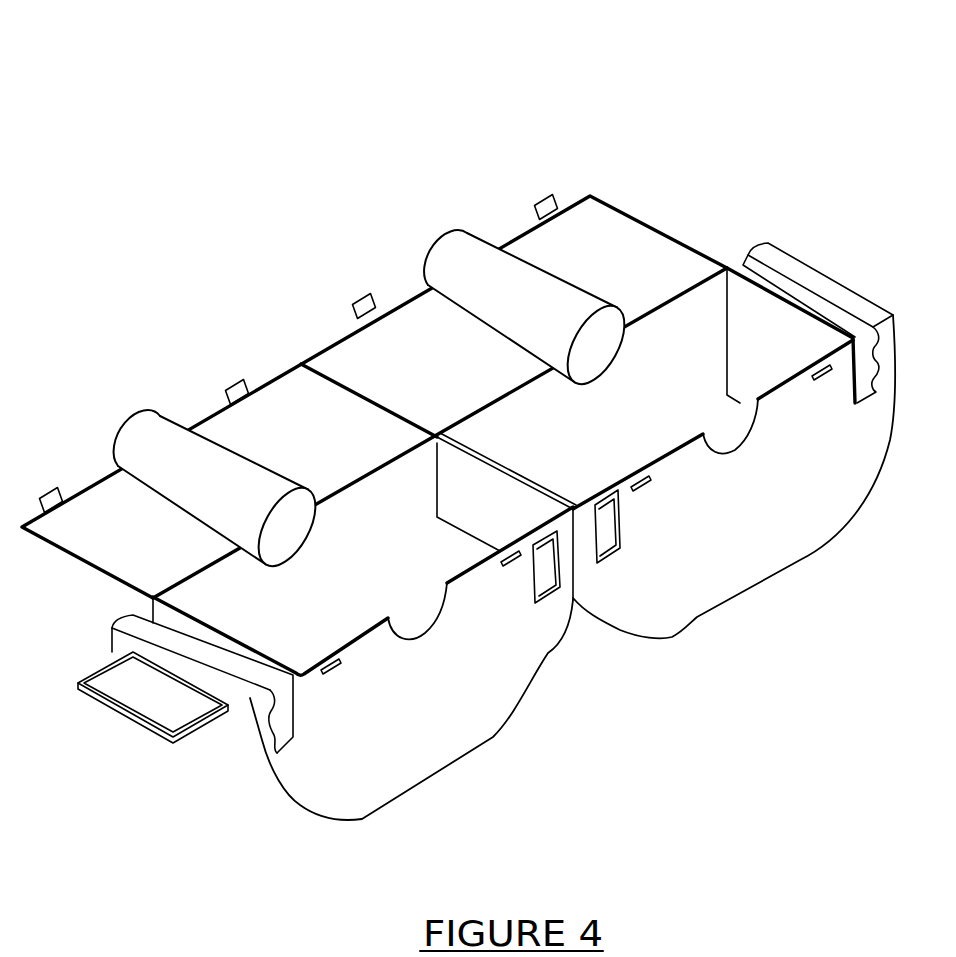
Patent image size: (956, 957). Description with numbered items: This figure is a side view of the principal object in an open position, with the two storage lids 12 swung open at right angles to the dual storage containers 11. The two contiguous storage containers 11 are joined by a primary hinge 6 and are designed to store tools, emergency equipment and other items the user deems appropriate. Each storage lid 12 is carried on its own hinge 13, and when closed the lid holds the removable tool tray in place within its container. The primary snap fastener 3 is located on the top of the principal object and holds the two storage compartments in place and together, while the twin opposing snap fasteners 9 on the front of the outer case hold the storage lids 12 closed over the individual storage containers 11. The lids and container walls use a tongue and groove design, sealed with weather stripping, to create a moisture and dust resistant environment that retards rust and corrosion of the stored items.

The primary snap fastener 3 is at (132, 722).
The primary hinge 6 is at (513, 460).
The twin opposing snap fasteners 9 is at (67, 478).
The storage containers 11 is at (548, 653).
The storage lid 12 is at (160, 408).
The hinge 13 is at (215, 563).